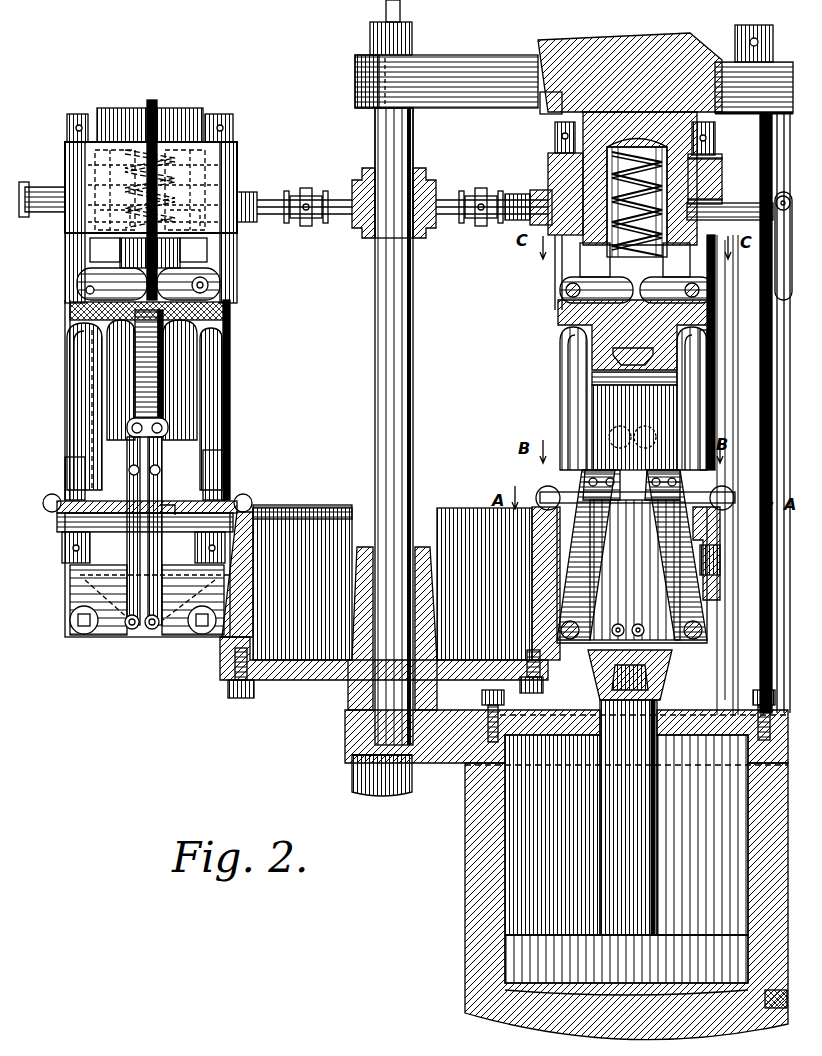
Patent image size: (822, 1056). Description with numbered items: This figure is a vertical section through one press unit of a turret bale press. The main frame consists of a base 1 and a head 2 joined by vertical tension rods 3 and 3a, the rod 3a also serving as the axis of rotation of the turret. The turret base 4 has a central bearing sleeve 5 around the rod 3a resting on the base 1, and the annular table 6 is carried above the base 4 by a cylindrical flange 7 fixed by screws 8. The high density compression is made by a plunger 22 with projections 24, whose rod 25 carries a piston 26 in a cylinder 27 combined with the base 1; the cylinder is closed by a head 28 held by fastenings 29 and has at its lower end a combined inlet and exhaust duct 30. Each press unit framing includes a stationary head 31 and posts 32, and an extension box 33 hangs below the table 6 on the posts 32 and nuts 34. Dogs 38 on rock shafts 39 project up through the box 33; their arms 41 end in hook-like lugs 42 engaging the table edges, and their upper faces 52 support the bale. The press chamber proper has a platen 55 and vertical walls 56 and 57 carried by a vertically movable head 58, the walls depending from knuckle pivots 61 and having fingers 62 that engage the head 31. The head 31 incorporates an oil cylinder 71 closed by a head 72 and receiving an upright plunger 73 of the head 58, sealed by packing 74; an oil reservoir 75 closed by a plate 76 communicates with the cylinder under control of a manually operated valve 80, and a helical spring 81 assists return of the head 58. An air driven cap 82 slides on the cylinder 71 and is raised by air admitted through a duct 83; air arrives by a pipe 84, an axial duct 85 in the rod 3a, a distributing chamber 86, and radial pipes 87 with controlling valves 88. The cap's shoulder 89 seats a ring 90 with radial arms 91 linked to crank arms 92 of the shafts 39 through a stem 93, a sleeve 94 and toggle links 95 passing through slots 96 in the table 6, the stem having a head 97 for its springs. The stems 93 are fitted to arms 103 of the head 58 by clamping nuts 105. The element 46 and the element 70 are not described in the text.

The base 1 is at (460, 776).
The head 2 is at (468, 60).
The tension rod 3 is at (775, 386).
The tension rod 3a is at (375, 372).
The turret base 4 is at (306, 680).
The central bearing sleeve 5 is at (424, 582).
The annular table 6 is at (238, 500).
The cylindrical flange 7 is at (540, 590).
The screws 8 is at (242, 692).
The plunger 22 is at (678, 663).
The projections 24 is at (660, 672).
The rod 25 is at (628, 817).
The piston 26 is at (626, 965).
The cylinder 27 is at (478, 885).
The head 28 is at (700, 730).
The fastenings 29 is at (482, 696).
The combined compressed air inlet and exhaust duct 30 is at (774, 1010).
The stationary head 31 is at (246, 166).
The posts 32 is at (67, 252).
The extension box 33 is at (65, 600).
The nuts 34 is at (67, 126).
The dogs 38 is at (79, 583).
The rock shafts 39 is at (85, 634).
The arms 41 is at (70, 490).
The hook-like lugs 42 is at (52, 496).
The wall 46 is at (540, 536).
The upper faces 52 is at (631, 474).
The top wall or platen 55 is at (594, 361).
The vertical walls 56 is at (75, 412).
The vertical walls 57 is at (185, 345).
The vertically movable head 58 is at (600, 318).
The knuckle pivots 61 is at (90, 286).
The inwardly directed fingers 62 is at (95, 272).
The collar 70 is at (600, 385).
The cylinder 71 is at (628, 140).
The head 72 is at (642, 133).
The upright plunger 73 is at (390, 257).
The packing 74 is at (540, 224).
The oil reservoir 75 is at (705, 174).
The plate 76 is at (722, 157).
The manually operated valve 80 is at (45, 192).
The expansive helical spring 81 is at (245, 196).
The air driven cylindrical cap 82 is at (555, 126).
The air duct 83 is at (520, 200).
The pipe 84 is at (386, 11).
The duct 85 is at (396, 148).
The distributing chamber 86 is at (420, 178).
The radial pipes 87 is at (338, 214).
The controlling valves 88 is at (306, 196).
The external annular shoulder 89 is at (715, 134).
The ring 90 is at (170, 120).
The radial arms 91 is at (150, 114).
The crank arms 92 is at (105, 632).
The stem 93 is at (137, 189).
The sleeve 94 is at (163, 385).
The toggle links 95 is at (398, 518).
The slots 96 is at (583, 116).
The head 97 is at (135, 372).
The arms 103 is at (95, 318).
The clamping nuts 105 is at (88, 293).